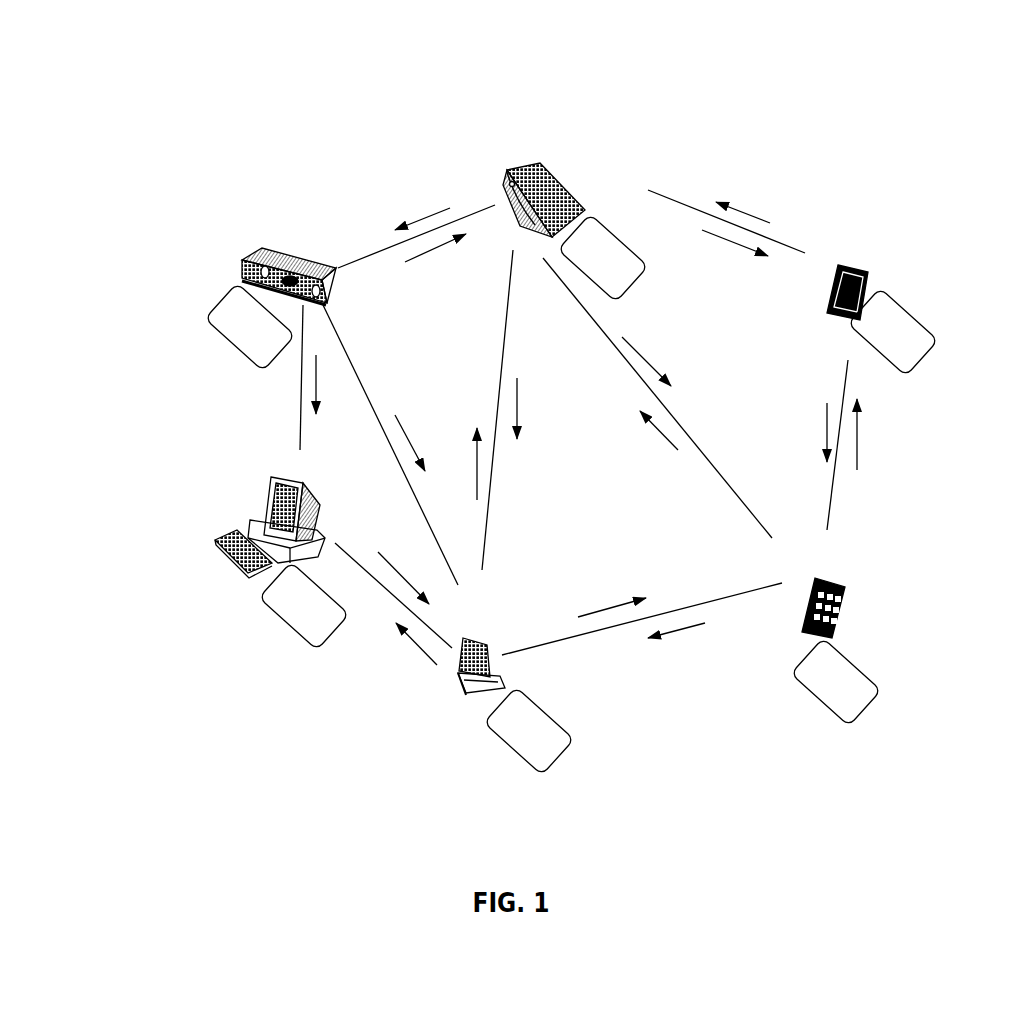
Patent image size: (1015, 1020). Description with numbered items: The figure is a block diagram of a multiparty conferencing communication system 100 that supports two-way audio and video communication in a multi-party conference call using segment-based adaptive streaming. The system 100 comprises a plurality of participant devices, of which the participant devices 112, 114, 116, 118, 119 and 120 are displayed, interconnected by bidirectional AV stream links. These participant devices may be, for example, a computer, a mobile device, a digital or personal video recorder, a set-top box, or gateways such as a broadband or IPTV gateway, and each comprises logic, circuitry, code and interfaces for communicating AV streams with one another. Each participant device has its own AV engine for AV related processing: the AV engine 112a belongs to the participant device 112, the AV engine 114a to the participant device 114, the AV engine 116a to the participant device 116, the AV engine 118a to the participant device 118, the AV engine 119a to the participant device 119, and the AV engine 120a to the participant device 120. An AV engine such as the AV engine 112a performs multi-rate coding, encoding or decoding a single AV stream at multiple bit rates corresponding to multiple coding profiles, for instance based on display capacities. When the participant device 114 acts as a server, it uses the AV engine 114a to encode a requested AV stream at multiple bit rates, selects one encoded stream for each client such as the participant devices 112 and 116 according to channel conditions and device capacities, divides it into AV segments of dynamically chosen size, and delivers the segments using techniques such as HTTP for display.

The multiparty conferencing communication system 100 is at (940, 106).
The participant device 112 is at (312, 489).
The AV engine 112a is at (342, 610).
The participant device 114 is at (476, 640).
The AV engine 114a is at (568, 731).
The participant device 116 is at (849, 580).
The AV engine 116a is at (877, 681).
The participant device 118 is at (862, 268).
The AV engine 118a is at (935, 341).
The participant device 119 is at (557, 175).
The AV engine 119a is at (650, 270).
The participant device 120 is at (278, 254).
The AV engine 120a is at (240, 357).